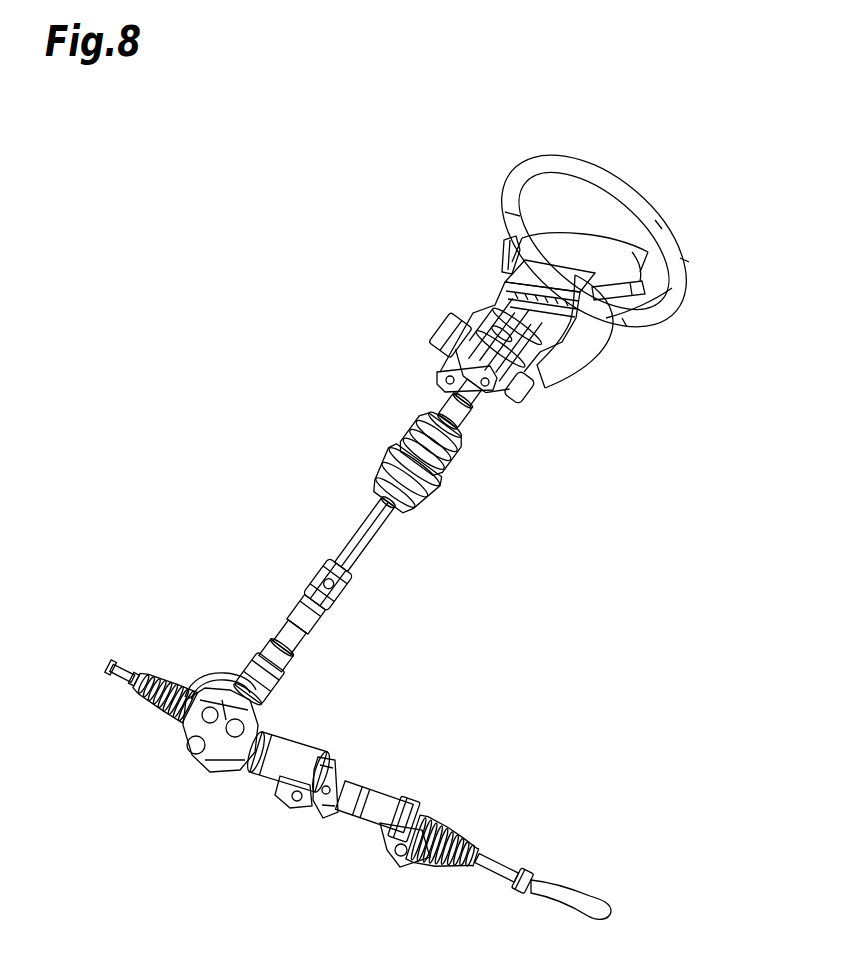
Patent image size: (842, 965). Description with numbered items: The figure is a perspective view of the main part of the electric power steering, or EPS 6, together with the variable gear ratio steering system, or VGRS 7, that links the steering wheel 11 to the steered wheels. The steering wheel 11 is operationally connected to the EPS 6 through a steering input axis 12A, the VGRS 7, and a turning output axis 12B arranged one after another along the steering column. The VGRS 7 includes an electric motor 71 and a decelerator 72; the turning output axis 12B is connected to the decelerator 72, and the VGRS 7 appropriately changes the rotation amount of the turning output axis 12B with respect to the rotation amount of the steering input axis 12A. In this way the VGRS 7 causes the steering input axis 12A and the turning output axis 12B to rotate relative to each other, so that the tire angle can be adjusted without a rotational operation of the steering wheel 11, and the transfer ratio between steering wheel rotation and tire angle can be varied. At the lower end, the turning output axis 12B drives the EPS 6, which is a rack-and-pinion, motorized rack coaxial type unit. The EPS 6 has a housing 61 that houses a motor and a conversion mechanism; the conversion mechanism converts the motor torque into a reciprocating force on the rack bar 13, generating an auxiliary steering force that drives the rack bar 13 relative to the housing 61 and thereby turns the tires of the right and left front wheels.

The steering wheel 11 is at (525, 174).
The steering input axis 12A is at (472, 416).
The VGRS 7 is at (415, 466).
The electric motor 71 is at (443, 453).
The decelerator 72 is at (415, 490).
The turning output axis 12B is at (372, 535).
The housing 61 is at (302, 747).
The EPS 6 is at (355, 790).
The rack bar 13 is at (490, 872).